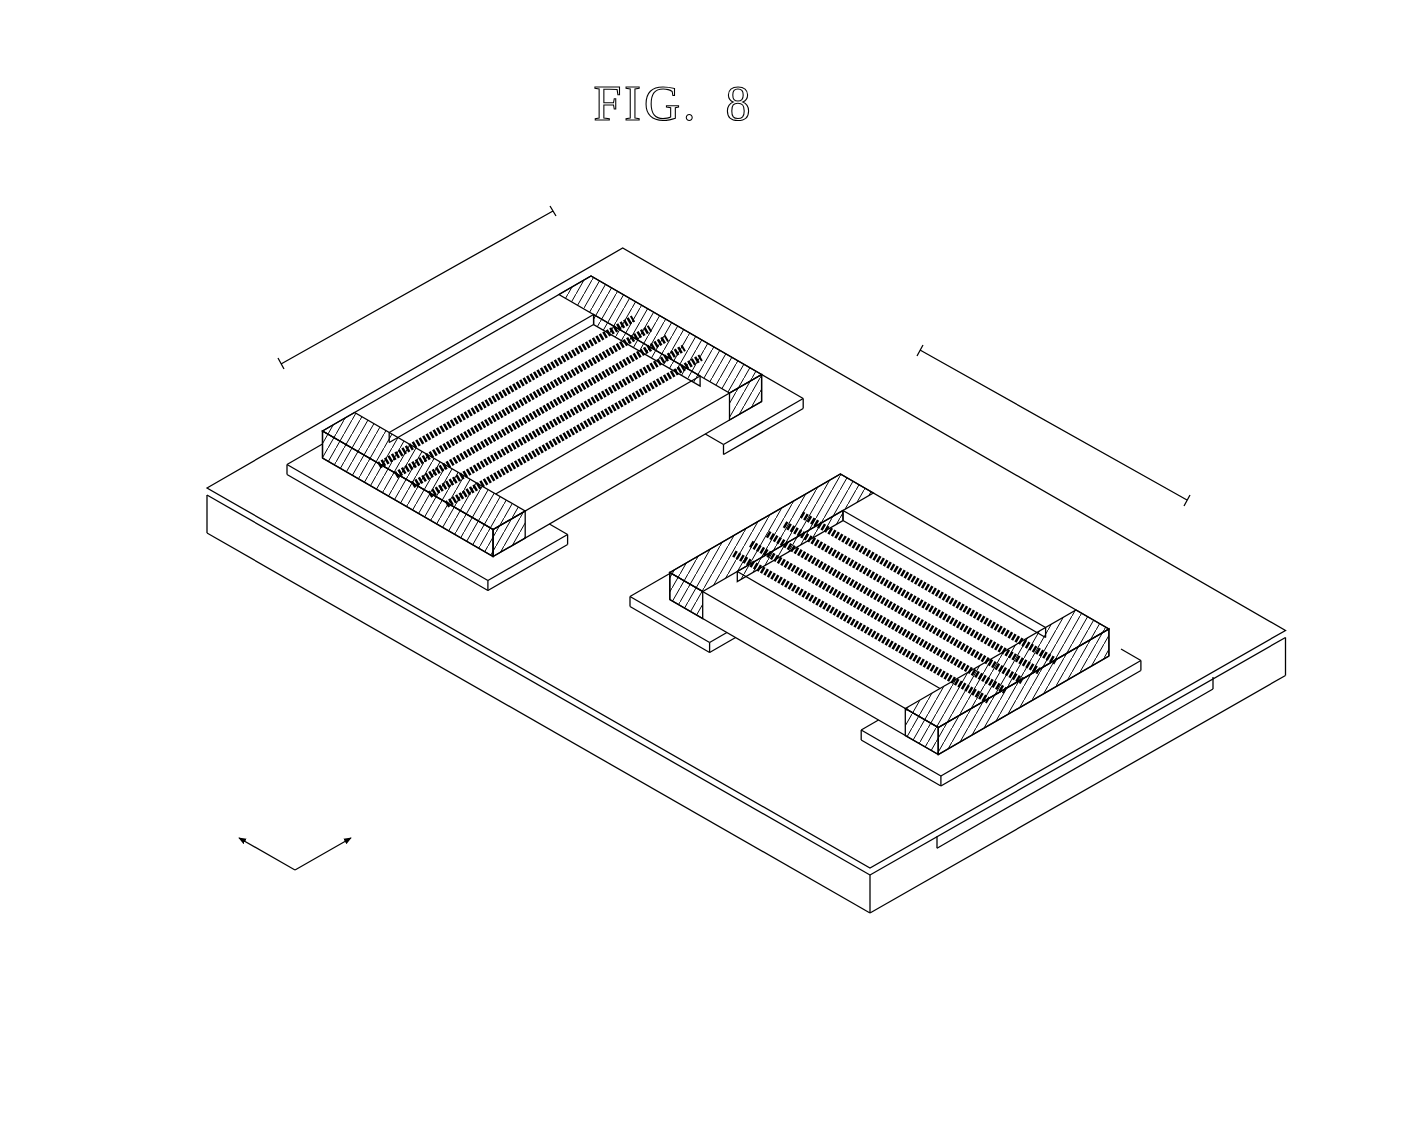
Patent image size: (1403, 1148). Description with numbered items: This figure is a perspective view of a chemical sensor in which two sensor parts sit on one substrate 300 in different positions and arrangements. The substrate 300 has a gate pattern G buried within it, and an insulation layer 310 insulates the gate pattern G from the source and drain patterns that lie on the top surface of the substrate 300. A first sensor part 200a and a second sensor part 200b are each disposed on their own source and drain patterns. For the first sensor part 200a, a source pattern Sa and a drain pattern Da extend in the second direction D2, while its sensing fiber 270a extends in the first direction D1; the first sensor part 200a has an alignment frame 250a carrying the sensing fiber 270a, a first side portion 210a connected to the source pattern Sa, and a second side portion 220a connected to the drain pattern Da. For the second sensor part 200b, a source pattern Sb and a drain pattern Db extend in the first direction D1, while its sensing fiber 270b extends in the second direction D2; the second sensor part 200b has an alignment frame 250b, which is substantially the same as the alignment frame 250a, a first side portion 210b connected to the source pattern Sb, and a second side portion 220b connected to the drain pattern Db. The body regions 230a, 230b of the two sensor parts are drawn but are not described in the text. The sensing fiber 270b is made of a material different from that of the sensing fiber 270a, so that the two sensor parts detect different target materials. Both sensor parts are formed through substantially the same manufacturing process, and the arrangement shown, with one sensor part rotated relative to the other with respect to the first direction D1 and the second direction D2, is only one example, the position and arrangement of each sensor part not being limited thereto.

The first sensor part 200a is at (838, 613).
The second sensor part 200b is at (553, 433).
The first side portion 210a is at (1077, 613).
The first side portion 210b is at (352, 430).
The second side portion 220a is at (839, 476).
The second side portion 220b is at (589, 283).
The first channel body 230a is at (953, 563).
The second channel body 230b is at (473, 363).
The alignment frame 250a is at (1053, 425).
The alignment frame 250b is at (417, 287).
The sensing fiber 270a is at (742, 507).
The sensing fiber 270b is at (648, 307).
The substrate 300 is at (1275, 661).
The insulation layer 310 is at (1288, 633).
The source pattern Sa is at (668, 622).
The source pattern Sb is at (383, 522).
The drain pattern Da is at (961, 774).
The drain pattern Db is at (782, 400).
The gate pattern G is at (960, 834).
The first direction D1 is at (251, 842).
The second direction D2 is at (338, 842).